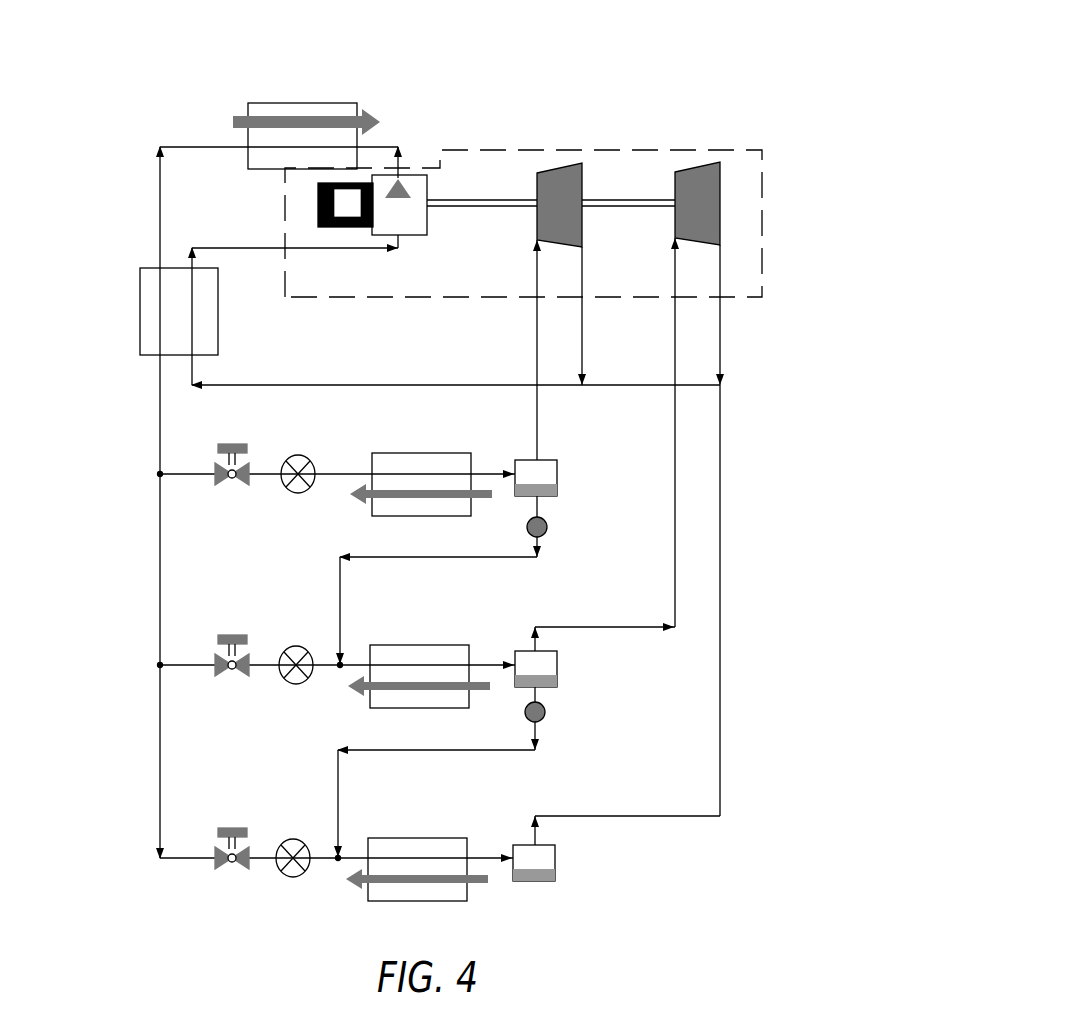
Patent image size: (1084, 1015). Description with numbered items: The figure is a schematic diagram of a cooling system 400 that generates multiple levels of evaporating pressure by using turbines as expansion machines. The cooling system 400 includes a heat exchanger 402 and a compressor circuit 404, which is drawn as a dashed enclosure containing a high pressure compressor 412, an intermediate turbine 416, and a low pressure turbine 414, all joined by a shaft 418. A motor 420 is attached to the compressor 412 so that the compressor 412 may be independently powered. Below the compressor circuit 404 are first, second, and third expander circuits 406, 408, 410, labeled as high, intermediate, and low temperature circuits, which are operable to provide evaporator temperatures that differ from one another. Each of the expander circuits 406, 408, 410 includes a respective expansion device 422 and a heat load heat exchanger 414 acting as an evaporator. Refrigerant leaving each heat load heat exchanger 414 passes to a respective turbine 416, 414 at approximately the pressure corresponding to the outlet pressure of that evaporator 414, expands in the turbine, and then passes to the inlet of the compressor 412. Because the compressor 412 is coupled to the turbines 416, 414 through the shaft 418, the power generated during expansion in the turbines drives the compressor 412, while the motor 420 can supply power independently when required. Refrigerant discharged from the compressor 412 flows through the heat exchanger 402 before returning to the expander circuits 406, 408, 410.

The cooling system 400 is at (808, 75).
The heat exchanger 402 is at (309, 101).
The compressor circuit 404 is at (508, 149).
The first expander circuit 406 is at (108, 421).
The second expander circuit 408 is at (105, 611).
The third expander circuit 410 is at (105, 776).
The high pressure compressor 412 is at (420, 175).
The low pressure turbine / heat load heat exchanger 414 is at (690, 168).
The intermediate turbine 416 is at (564, 166).
The shaft 418 is at (474, 208).
The motor 420 is at (318, 199).
The expansion device 422 is at (298, 493).